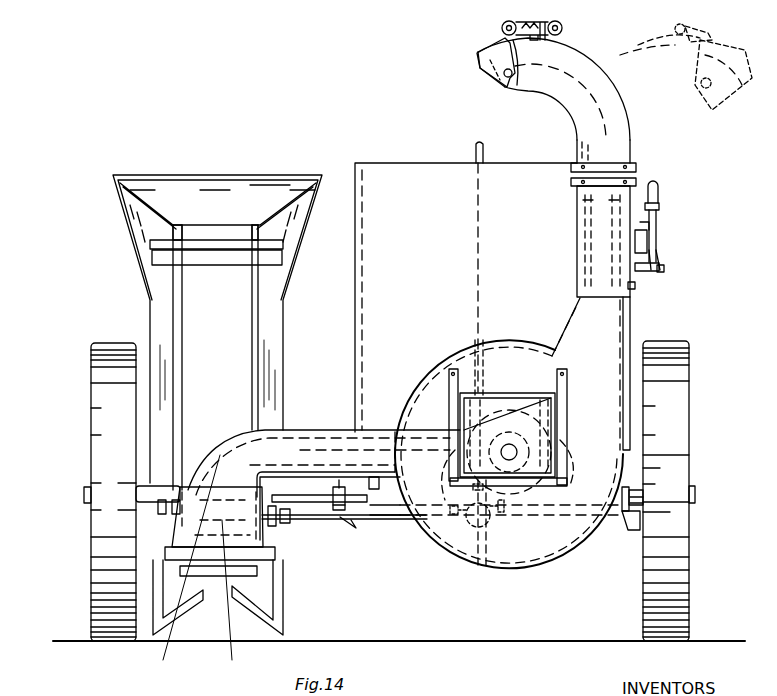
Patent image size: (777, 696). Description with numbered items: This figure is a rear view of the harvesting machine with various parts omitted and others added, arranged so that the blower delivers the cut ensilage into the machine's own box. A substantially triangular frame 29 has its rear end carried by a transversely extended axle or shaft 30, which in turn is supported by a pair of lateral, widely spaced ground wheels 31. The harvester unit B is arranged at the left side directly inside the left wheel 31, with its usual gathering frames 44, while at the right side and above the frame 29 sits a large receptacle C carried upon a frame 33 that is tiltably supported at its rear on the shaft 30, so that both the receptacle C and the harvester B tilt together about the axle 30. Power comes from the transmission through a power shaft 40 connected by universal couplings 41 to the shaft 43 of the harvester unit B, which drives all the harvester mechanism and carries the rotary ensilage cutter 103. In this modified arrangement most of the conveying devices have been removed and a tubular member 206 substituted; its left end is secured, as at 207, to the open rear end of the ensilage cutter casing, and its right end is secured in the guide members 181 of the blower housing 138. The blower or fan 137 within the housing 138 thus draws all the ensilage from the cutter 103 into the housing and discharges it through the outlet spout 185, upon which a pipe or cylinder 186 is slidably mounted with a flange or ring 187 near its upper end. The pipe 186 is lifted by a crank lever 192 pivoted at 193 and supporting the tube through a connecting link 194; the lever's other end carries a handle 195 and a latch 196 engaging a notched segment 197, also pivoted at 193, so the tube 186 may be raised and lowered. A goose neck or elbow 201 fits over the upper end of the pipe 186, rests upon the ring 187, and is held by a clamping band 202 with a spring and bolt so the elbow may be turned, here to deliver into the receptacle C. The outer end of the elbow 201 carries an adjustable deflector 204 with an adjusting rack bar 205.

The frame 29 is at (345, 528).
The axle or shaft 30 is at (84, 495).
The ground wheels 31 is at (382, 491).
The frame 33 is at (374, 490).
The power shaft 40 is at (296, 521).
The universal couplings 41 is at (284, 537).
The shaft 43 is at (233, 602).
The gathering frames 44 is at (149, 246).
The rotary ensilage cutter 103 is at (180, 569).
The blower or fan 137 is at (525, 548).
The blower housing 138 is at (564, 537).
The guides 181 is at (449, 390).
The outlet spout 185 is at (610, 318).
The pipe or cylinder 186 is at (597, 266).
The flange or ring 187 is at (578, 184).
The crank lever 192 is at (660, 250).
The pivot 193 is at (665, 270).
The connecting link 194 is at (636, 284).
The handle 195 is at (659, 189).
The latch 196 is at (647, 230).
The notched segment 197 is at (649, 244).
The goose neck or elbow 201 is at (580, 60).
The clamping band 202 is at (632, 165).
The adjustable deflector 204 is at (492, 58).
The adjusting rack bar 205 is at (530, 34).
The tubular member 206 is at (316, 431).
The securing point 207 is at (218, 577).
The harvester unit B is at (126, 238).
The receptacle C is at (428, 163).